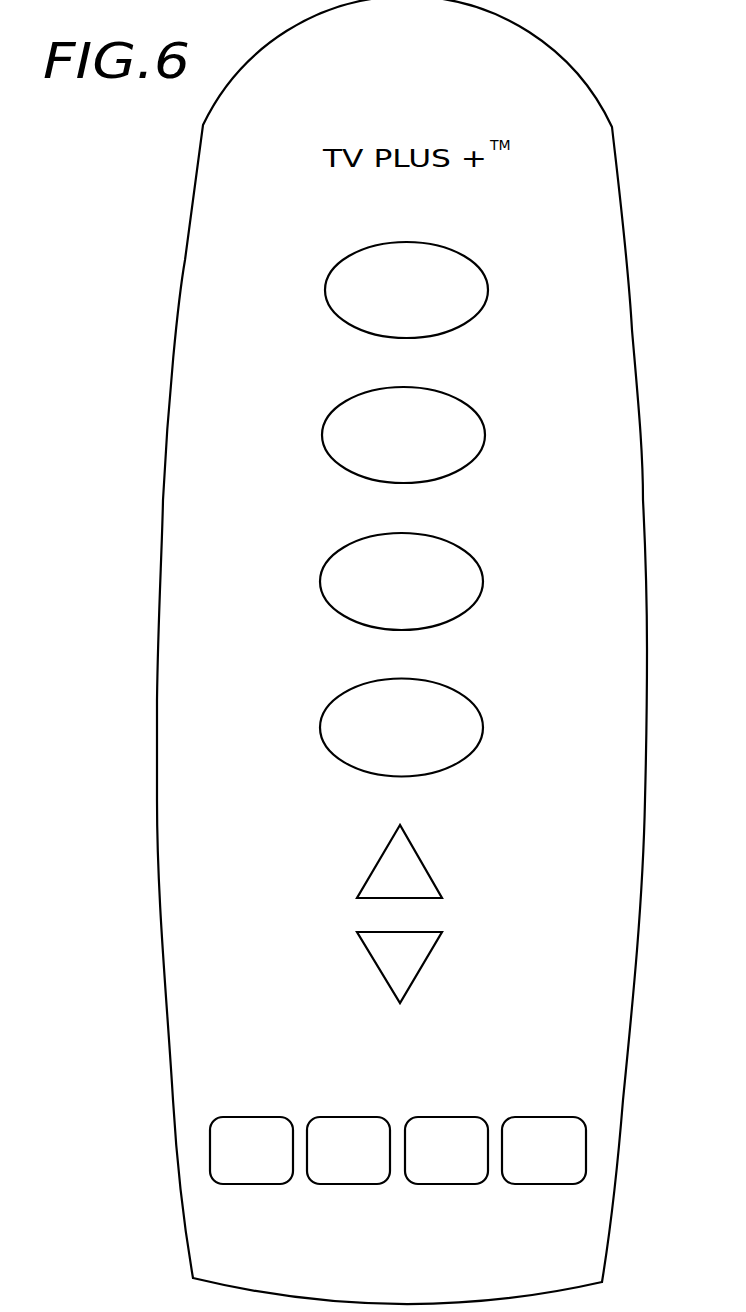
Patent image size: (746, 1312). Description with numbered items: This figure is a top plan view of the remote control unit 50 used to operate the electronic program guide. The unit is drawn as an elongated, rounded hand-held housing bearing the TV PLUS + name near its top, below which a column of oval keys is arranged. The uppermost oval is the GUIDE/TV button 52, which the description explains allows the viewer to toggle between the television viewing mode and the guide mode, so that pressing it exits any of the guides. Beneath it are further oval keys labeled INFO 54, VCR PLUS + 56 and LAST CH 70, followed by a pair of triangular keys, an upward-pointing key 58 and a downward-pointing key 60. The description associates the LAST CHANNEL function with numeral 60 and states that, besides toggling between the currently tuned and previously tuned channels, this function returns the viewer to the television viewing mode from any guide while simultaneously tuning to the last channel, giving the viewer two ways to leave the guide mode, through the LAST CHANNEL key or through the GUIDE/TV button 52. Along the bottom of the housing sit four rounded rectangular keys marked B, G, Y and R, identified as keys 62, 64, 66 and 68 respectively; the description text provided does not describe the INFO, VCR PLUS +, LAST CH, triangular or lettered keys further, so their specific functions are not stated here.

The remote control unit 50 is at (618, 236).
The GUIDE/TV button 52 is at (398, 247).
The INFO button 54 is at (397, 392).
The VCR PLUS + button 56 is at (395, 538).
The LAST CH button 70 is at (395, 684).
The up arrow button 58 is at (420, 860).
The LAST CHANNEL button 60 is at (420, 965).
The blue (B) color key 62 is at (258, 1117).
The green (G) color key 64 is at (355, 1117).
The yellow (Y) color key 66 is at (455, 1117).
The red (R) color key 68 is at (552, 1117).